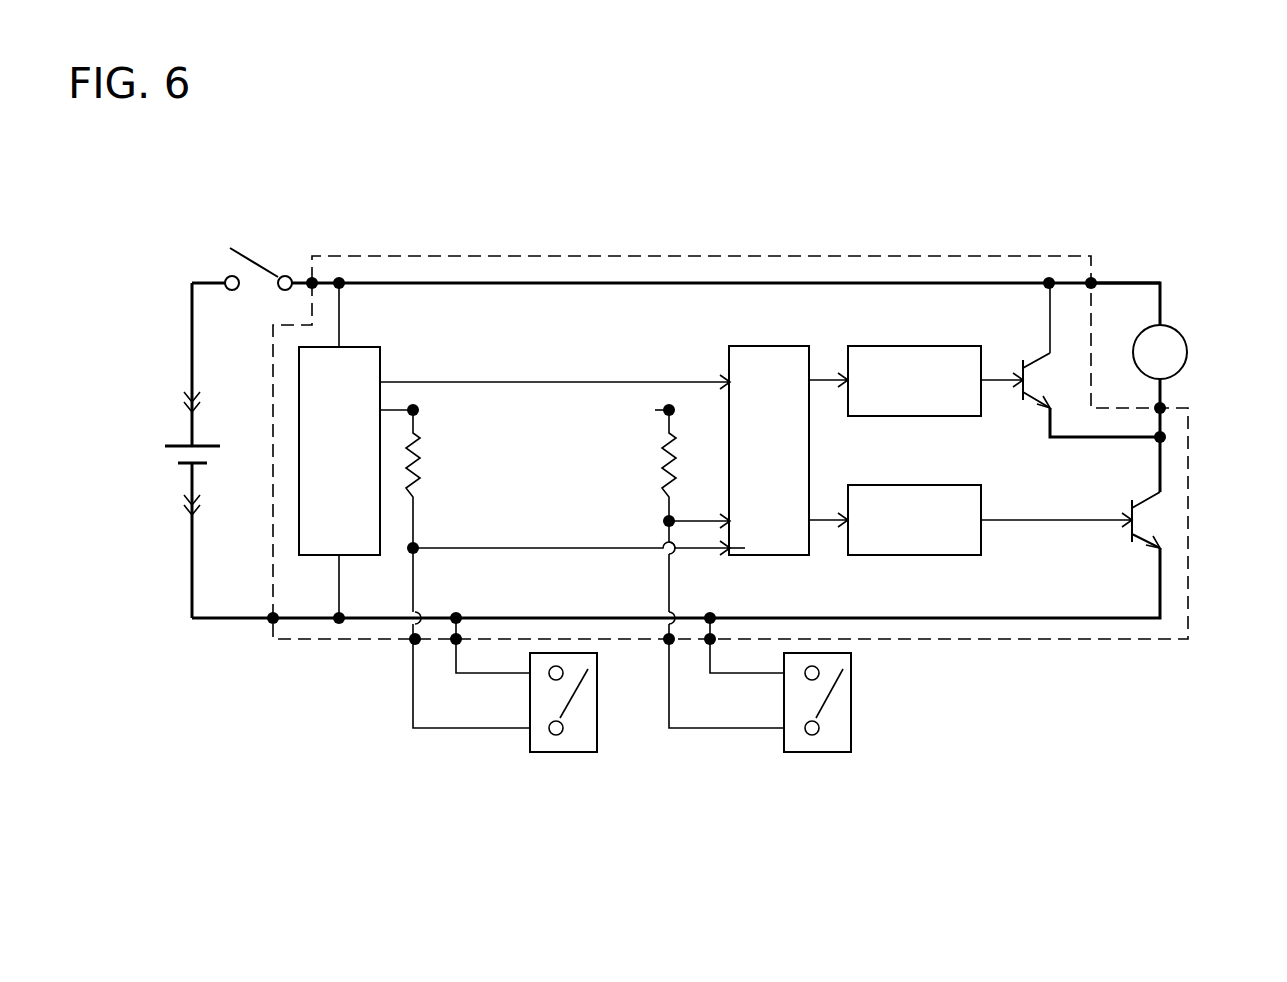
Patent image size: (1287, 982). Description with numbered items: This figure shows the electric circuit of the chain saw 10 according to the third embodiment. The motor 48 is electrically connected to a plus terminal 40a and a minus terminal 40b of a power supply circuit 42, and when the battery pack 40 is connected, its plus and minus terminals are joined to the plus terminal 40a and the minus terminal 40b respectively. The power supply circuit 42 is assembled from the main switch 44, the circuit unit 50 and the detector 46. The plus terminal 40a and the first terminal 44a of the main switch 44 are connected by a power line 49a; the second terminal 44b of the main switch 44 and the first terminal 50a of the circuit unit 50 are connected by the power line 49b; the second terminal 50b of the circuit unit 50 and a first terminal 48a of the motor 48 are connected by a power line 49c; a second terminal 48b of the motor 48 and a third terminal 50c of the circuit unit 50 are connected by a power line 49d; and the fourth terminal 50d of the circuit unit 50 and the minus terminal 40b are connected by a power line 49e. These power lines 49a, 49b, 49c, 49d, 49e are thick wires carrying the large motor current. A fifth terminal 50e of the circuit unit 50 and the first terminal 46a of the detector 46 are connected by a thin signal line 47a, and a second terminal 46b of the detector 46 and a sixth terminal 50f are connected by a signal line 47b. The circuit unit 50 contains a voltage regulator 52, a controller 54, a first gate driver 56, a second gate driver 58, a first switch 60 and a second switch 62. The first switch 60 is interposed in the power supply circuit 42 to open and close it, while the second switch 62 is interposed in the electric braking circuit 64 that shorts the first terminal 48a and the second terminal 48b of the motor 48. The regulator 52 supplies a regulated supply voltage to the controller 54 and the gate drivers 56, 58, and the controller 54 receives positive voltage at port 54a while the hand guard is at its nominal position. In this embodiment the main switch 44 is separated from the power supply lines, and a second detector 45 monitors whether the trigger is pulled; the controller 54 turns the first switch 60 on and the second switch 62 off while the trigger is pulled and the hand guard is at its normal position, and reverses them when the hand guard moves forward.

The chain saw 10 is at (977, 203).
The battery pack 40 is at (183, 446).
The plus terminal 40a is at (190, 392).
The minus terminal 40b is at (190, 513).
The power supply circuit 42 is at (1163, 595).
The main switch 44 is at (263, 268).
The first terminal of main switch 44a is at (229, 277).
The second terminal of main switch 44b is at (286, 276).
The second detector 45 is at (851, 733).
The detector 46 is at (597, 733).
The first terminal of detector 46a is at (530, 733).
The second terminal of detector 46b is at (530, 675).
The signal line 47a is at (413, 705).
The signal line 47b is at (456, 662).
The motor 48 is at (1180, 328).
The first terminal of motor 48a is at (1164, 318).
The second terminal of motor 48b is at (1168, 385).
The power line 49a is at (192, 310).
The power line 49b is at (300, 280).
The power line 49c is at (1123, 282).
The power line 49d is at (1168, 397).
The power line 49e is at (203, 622).
The circuit unit 50 is at (1060, 640).
The first terminal of circuit unit 50a is at (316, 275).
The second terminal of circuit unit 50b is at (1093, 278).
The third terminal of circuit unit 50c is at (1170, 420).
The fourth terminal of circuit unit 50d is at (272, 625).
The fifth terminal of circuit unit 50e is at (412, 641).
The sixth terminal of circuit unit 50f is at (454, 641).
The voltage regulator 52 is at (380, 358).
The controller 54 is at (762, 346).
The port 54a is at (745, 550).
The first gate driver 56 is at (912, 485).
The second gate driver 58 is at (908, 346).
The first switch 60 is at (1147, 498).
The second switch 62 is at (1037, 357).
The electric braking circuit 64 is at (1048, 422).